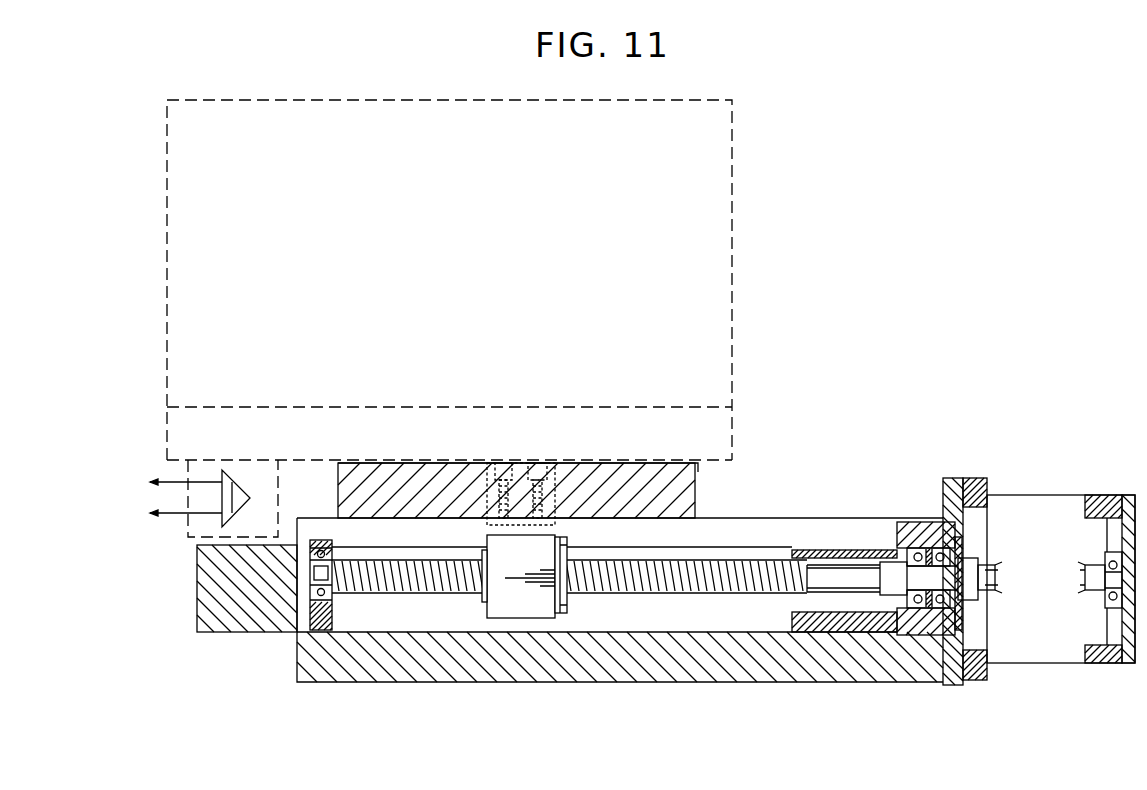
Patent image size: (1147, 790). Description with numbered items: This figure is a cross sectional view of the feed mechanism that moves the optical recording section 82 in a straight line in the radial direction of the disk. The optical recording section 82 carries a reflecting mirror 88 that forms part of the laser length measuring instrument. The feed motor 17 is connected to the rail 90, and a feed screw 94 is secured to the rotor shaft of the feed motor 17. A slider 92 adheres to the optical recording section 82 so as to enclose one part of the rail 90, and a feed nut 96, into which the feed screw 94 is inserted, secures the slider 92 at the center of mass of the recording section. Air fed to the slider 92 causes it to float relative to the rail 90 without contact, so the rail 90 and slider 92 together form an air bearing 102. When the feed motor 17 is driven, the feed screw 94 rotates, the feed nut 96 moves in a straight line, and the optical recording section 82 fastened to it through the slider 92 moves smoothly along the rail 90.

The feed motor 17 is at (1047, 508).
The optical recording section 82 is at (453, 247).
The reflecting mirror 88 is at (266, 470).
The rail 90 is at (771, 676).
The slider 92 is at (697, 503).
The feed screw 94 is at (672, 586).
The feed nut 96 is at (476, 598).
The air bearing 102 is at (700, 472).